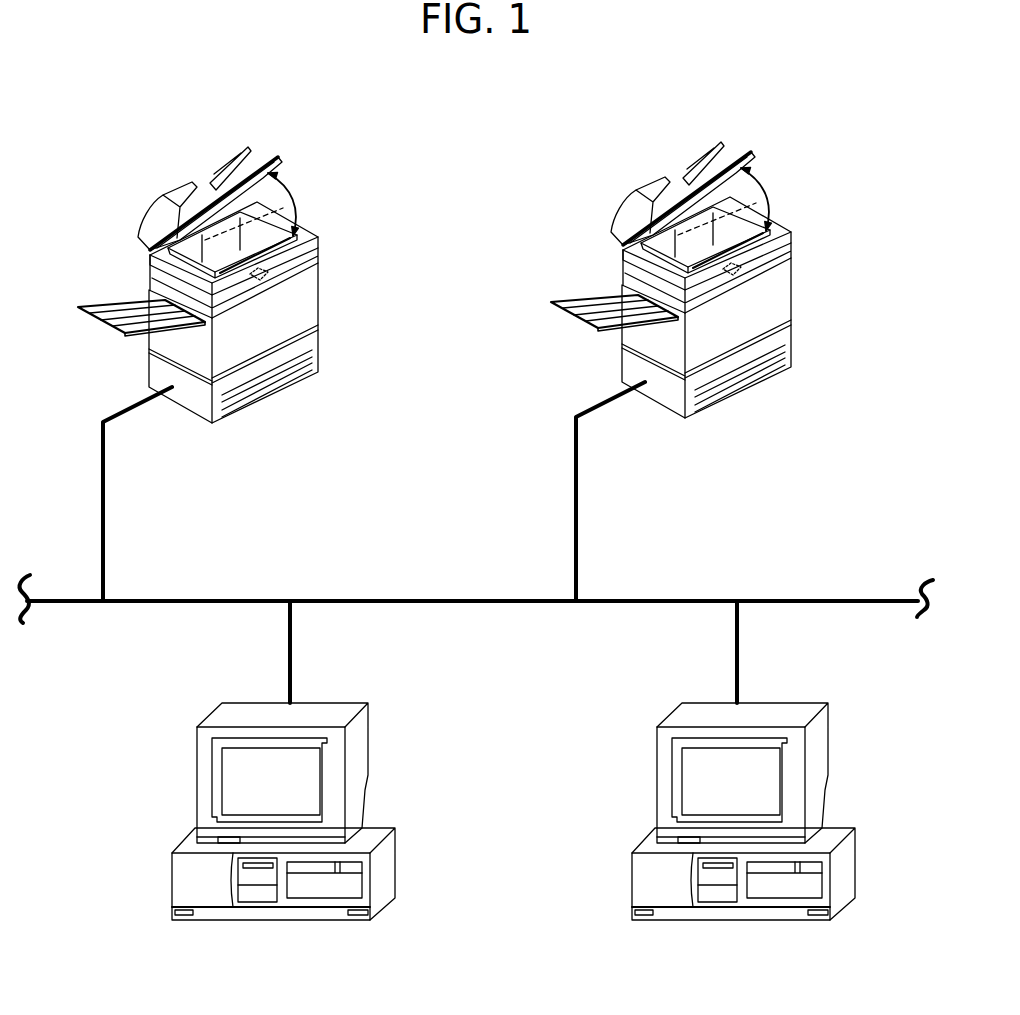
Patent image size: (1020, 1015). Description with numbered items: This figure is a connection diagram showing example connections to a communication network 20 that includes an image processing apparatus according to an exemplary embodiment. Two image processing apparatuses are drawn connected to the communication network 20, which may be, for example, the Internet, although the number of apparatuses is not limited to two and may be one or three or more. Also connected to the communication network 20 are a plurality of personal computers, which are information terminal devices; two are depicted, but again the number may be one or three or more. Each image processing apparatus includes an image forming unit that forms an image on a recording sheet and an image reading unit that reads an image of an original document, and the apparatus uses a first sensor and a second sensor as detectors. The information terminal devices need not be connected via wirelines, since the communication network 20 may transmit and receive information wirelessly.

The communication network 20 is at (435, 601).